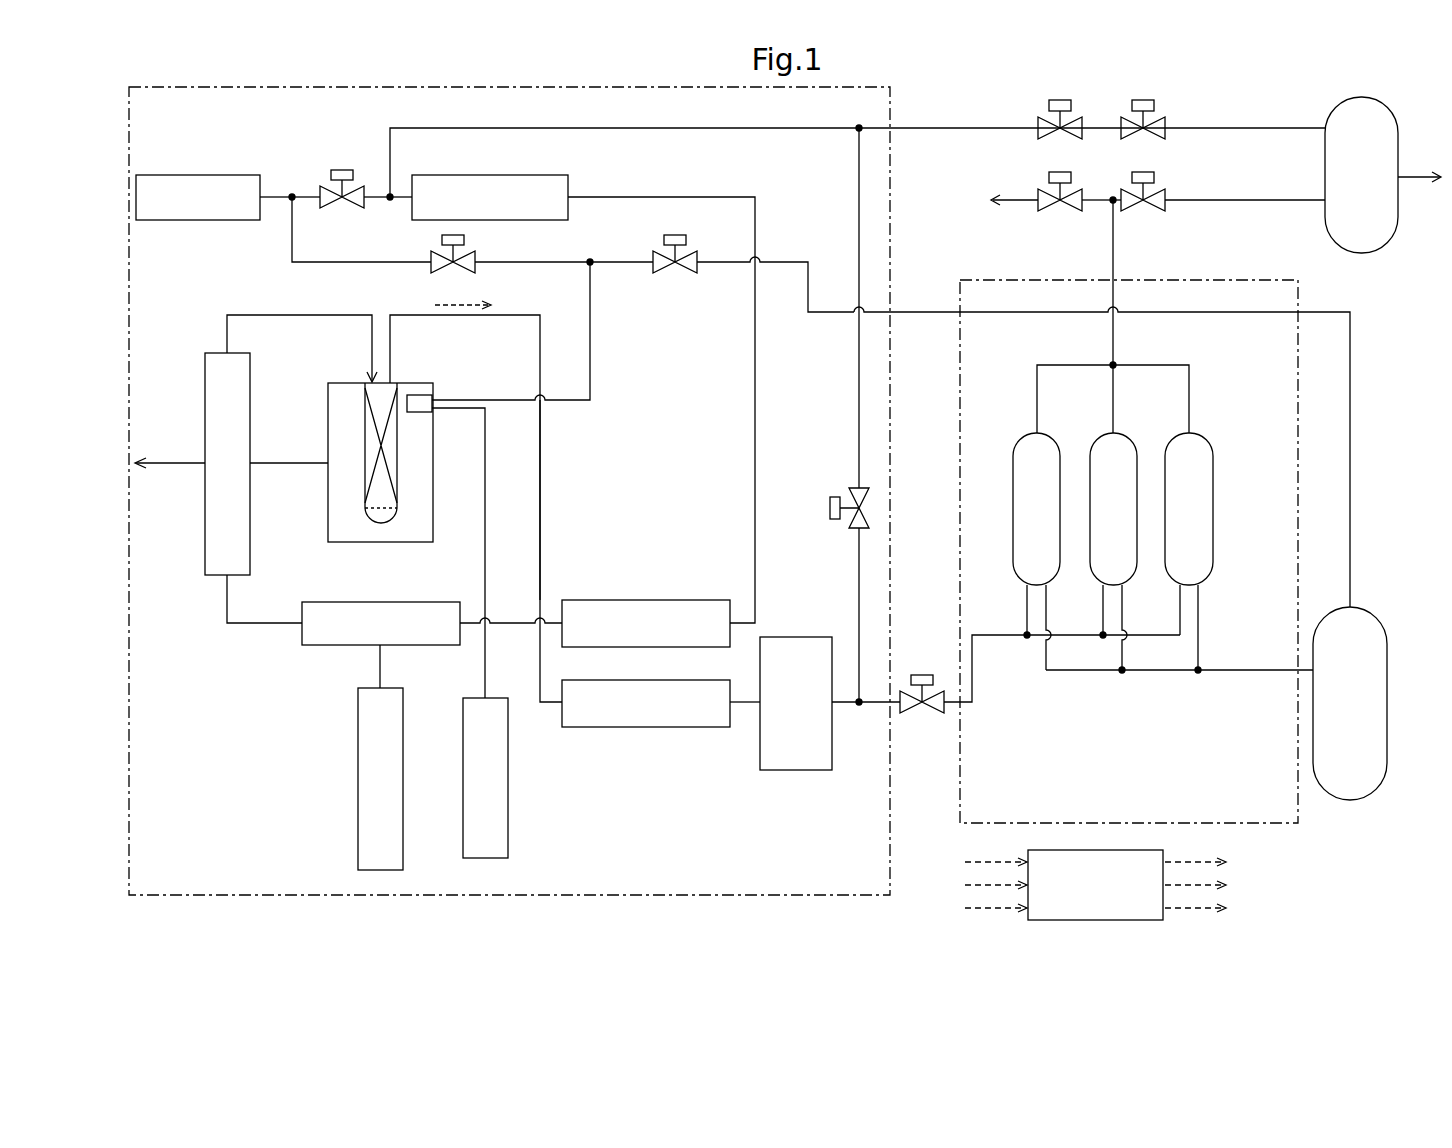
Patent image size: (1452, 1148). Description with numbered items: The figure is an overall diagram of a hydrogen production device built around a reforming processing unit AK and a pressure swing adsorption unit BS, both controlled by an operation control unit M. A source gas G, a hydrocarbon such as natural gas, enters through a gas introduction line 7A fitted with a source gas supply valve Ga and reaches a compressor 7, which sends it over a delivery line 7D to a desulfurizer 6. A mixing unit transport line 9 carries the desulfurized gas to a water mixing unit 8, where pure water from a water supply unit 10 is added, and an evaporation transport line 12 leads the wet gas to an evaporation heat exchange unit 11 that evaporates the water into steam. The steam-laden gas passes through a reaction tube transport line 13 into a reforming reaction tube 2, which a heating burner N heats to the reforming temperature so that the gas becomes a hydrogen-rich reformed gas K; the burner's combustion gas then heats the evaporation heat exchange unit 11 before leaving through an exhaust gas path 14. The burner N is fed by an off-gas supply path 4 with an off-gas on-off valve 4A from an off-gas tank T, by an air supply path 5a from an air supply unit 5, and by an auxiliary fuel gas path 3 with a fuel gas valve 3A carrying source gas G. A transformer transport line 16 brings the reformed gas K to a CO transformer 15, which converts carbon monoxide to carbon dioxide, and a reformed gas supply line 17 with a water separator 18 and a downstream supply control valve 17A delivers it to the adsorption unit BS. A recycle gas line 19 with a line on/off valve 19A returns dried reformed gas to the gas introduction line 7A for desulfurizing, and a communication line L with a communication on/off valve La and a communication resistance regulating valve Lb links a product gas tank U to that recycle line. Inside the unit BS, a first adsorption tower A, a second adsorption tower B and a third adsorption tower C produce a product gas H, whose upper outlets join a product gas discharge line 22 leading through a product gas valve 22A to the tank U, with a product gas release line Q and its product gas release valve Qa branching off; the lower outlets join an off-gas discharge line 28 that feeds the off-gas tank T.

The reforming processing unit AK is at (677, 896).
The pressure swing adsorption unit BS is at (1297, 825).
The source gas G is at (210, 175).
The source gas supply valve Ga is at (341, 170).
The gas introduction line 7A is at (376, 200).
The compressor 7 is at (540, 175).
The delivery line 7D is at (717, 197).
The communication line L is at (918, 130).
The communication on/off valve La is at (1049, 104).
The communication resistance regulating valve Lb is at (1154, 104).
The product gas tank U is at (1400, 150).
The product gas release valve Qa is at (1049, 176).
The product gas valve 22A is at (1154, 176).
The product gas H is at (1225, 227).
The product gas release line Q is at (1100, 210).
The auxiliary fuel gas path 3 is at (375, 265).
The fuel gas valve 3A is at (465, 240).
The off-gas on-off valve 4A is at (663, 240).
The off-gas supply path 4 is at (715, 267).
The product gas discharge line 22 is at (1115, 330).
The reaction tube transport line 13 is at (227, 330).
The reformed gas K is at (476, 490).
The transformer transport line 16 is at (542, 440).
The evaporation heat exchange unit 11 is at (205, 528).
The exhaust gas path 14 is at (172, 458).
The evaporation transport line 12 is at (245, 625).
The reforming reaction tube 2 is at (372, 522).
The heating burner N is at (420, 395).
The air supply path 5a is at (483, 668).
The water mixing unit 8 is at (325, 650).
The mixing unit transport line 9 is at (560, 615).
The desulfurizer 6 is at (665, 600).
The water supply unit 10 is at (358, 825).
The air supply unit 5 is at (508, 780).
The CO transformer 15 is at (655, 728).
The reformed gas supply line 17 is at (745, 705).
The water separator 18 is at (800, 770).
The recycle gas line 19 is at (857, 585).
The line on/off valve 19A is at (828, 505).
The supply control valve 17A is at (922, 675).
The first adsorption tower A is at (1043, 440).
The second adsorption tower B is at (1120, 440).
The third adsorption tower C is at (1200, 440).
The off-gas discharge line 28 is at (1160, 672).
The off-gas tank T is at (1380, 648).
The operation control unit M is at (1108, 920).